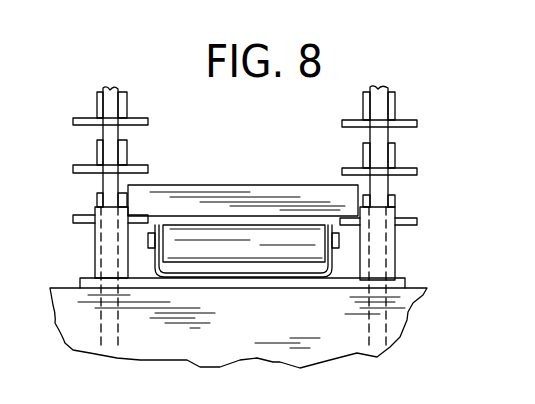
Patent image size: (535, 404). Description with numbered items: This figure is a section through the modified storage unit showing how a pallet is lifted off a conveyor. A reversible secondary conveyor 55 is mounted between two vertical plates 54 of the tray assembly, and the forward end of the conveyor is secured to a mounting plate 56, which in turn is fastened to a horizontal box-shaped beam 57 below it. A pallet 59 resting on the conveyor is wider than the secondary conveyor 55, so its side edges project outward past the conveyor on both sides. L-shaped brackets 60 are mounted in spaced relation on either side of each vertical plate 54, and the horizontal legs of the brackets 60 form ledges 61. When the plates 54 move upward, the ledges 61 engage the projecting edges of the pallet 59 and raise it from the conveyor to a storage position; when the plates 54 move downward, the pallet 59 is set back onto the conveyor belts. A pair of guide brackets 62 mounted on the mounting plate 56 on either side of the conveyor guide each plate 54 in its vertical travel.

The vertical plate 54 is at (115, 88).
The secondary conveyor 55 is at (312, 265).
The mounting plate 56 is at (405, 283).
The horizontal box-shaped beam 57 is at (185, 355).
The pallet 59 is at (265, 187).
The L-shaped bracket 60 is at (97, 102).
The ledge 61 is at (77, 127).
The guide bracket 62 is at (95, 246).